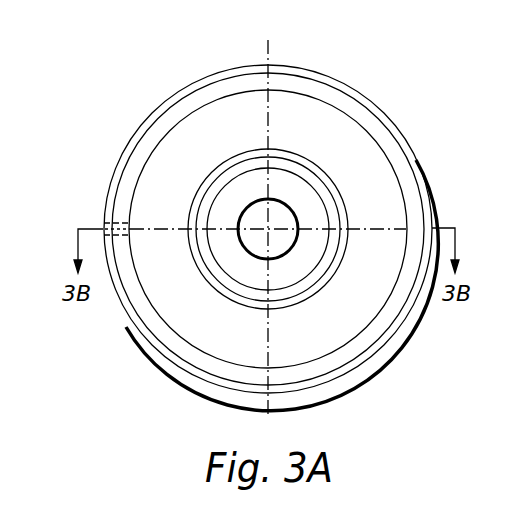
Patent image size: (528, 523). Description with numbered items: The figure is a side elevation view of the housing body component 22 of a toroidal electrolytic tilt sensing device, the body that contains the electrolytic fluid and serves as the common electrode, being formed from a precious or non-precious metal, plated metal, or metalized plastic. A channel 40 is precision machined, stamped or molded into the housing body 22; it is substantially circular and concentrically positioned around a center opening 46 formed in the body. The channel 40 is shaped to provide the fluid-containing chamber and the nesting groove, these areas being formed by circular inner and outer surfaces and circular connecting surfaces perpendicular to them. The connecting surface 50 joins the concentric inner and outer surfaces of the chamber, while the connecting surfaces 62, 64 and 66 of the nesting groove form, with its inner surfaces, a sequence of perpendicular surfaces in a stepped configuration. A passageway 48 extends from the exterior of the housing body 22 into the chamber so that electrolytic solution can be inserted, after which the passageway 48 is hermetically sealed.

The housing body component 22 is at (352, 66).
The channel 40 is at (362, 167).
The center opening 46 is at (253, 242).
The passageway 48 is at (103, 228).
The connecting surface 50 is at (190, 127).
The connecting surface 62 is at (313, 277).
The connecting surface 64 is at (288, 302).
The connecting surface 66 is at (388, 147).